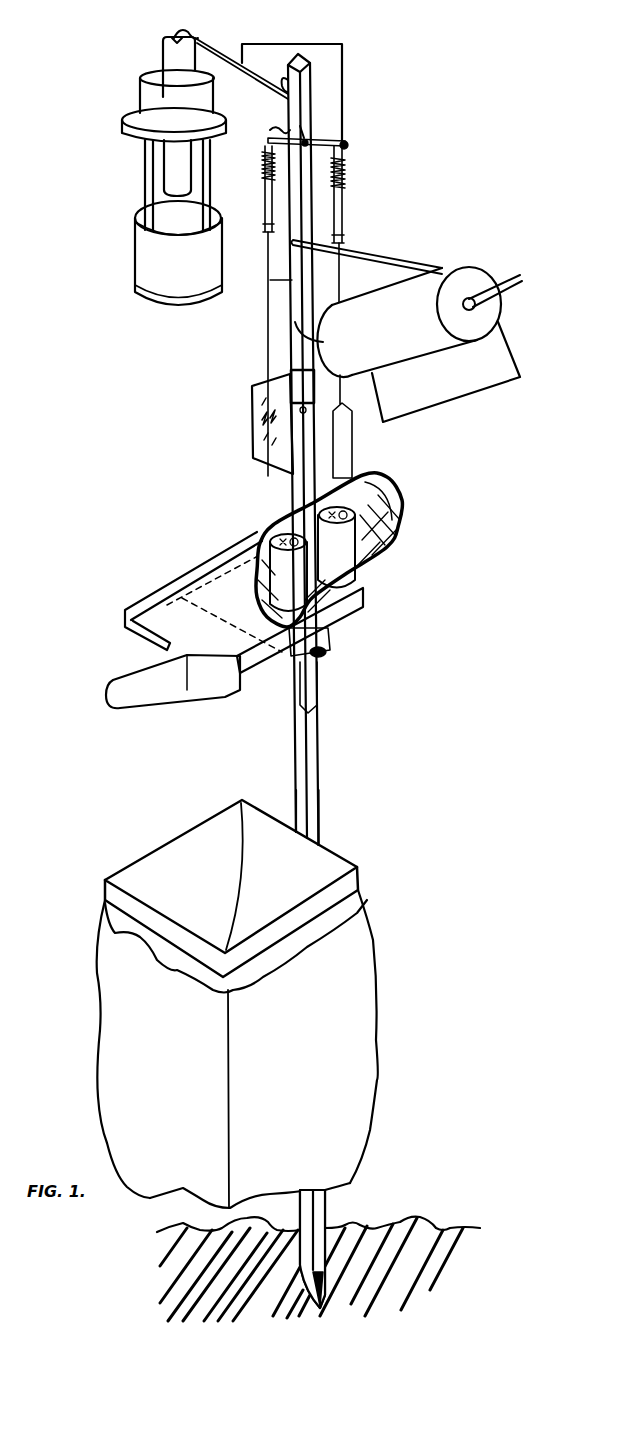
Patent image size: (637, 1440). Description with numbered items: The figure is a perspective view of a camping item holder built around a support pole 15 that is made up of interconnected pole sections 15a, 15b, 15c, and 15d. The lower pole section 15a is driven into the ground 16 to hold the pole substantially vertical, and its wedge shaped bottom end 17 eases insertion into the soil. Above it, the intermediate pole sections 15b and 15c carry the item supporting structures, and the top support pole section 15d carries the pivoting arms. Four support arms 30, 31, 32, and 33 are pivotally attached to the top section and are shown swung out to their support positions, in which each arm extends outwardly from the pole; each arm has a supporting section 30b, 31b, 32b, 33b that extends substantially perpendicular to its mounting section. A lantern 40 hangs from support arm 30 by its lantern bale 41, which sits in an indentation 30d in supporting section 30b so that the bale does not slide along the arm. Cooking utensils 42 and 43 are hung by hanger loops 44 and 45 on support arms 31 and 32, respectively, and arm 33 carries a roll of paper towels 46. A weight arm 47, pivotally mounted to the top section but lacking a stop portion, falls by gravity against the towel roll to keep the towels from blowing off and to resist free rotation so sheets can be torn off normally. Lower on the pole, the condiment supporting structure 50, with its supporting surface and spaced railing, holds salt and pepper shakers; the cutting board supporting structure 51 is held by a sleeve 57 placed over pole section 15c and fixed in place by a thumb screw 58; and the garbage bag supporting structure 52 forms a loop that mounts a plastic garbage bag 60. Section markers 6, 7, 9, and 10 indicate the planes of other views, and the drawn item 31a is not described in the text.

The support pole 15 is at (343, 739).
The lower pole section 15a is at (328, 1208).
The intermediate pole section 15b is at (319, 813).
The intermediate pole section 15c is at (280, 488).
The top support pole section 15d is at (282, 282).
The ground 16 is at (443, 1224).
The wedge shaped bottom end 17 is at (320, 1297).
The section line 6- 6 is at (358, 494).
The section line 7- 7 is at (348, 64).
The section line 9- 9 is at (385, 651).
The section line 10- 10 is at (363, 797).
The support arm 30 is at (214, 50).
The supporting section 30b is at (190, 36).
The indentation 30d is at (177, 36).
The support arm 31 is at (318, 140).
The cross bar center 31a is at (312, 140).
The supporting section 31b is at (348, 147).
The support arm 32 is at (305, 107).
The supporting section 32b is at (270, 128).
The support arm 33 is at (501, 286).
The supporting section 33b is at (478, 307).
The lantern 40 is at (145, 258).
The lantern bale 41 is at (162, 57).
The cooking utensil 42 is at (268, 333).
The cooking utensil 43 is at (343, 217).
The hanger loop 44 is at (264, 162).
The hanger loop 45 is at (344, 158).
The roll of paper towels 46 is at (440, 343).
The weight arm 47 is at (390, 262).
The condiment supporting structure 50 is at (395, 553).
The cutting board supporting structure 51 is at (125, 611).
The garbage bag supporting structure 52 is at (143, 858).
The sleeve 57 is at (330, 642).
The thumb screw 58 is at (325, 656).
The plastic garbage bag 60 is at (327, 1002).